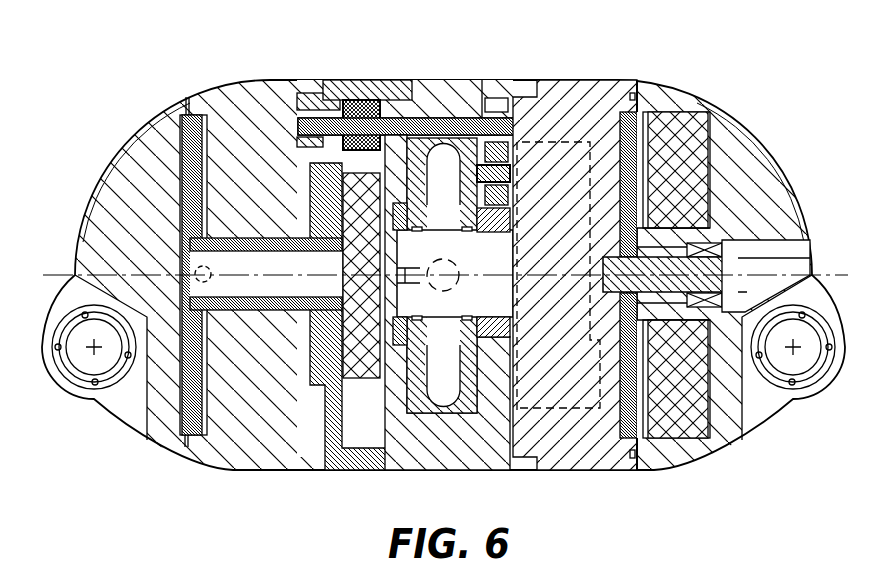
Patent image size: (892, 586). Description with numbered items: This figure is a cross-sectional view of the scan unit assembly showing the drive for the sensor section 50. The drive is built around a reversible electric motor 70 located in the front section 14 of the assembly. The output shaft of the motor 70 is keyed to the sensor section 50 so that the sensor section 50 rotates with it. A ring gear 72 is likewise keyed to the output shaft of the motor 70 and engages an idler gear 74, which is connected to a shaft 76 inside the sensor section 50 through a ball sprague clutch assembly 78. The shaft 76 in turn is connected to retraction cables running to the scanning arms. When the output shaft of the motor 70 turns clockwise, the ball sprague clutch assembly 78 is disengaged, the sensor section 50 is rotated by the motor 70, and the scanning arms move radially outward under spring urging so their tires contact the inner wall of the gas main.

The front section 14 is at (114, 114).
The sensor section 50 is at (577, 97).
The reversible electric motor 70 is at (245, 58).
The ring gear 72 is at (325, 423).
The idler gear 74 is at (333, 108).
The shaft 76 is at (441, 112).
The ball sprague clutch assembly 78 is at (360, 100).